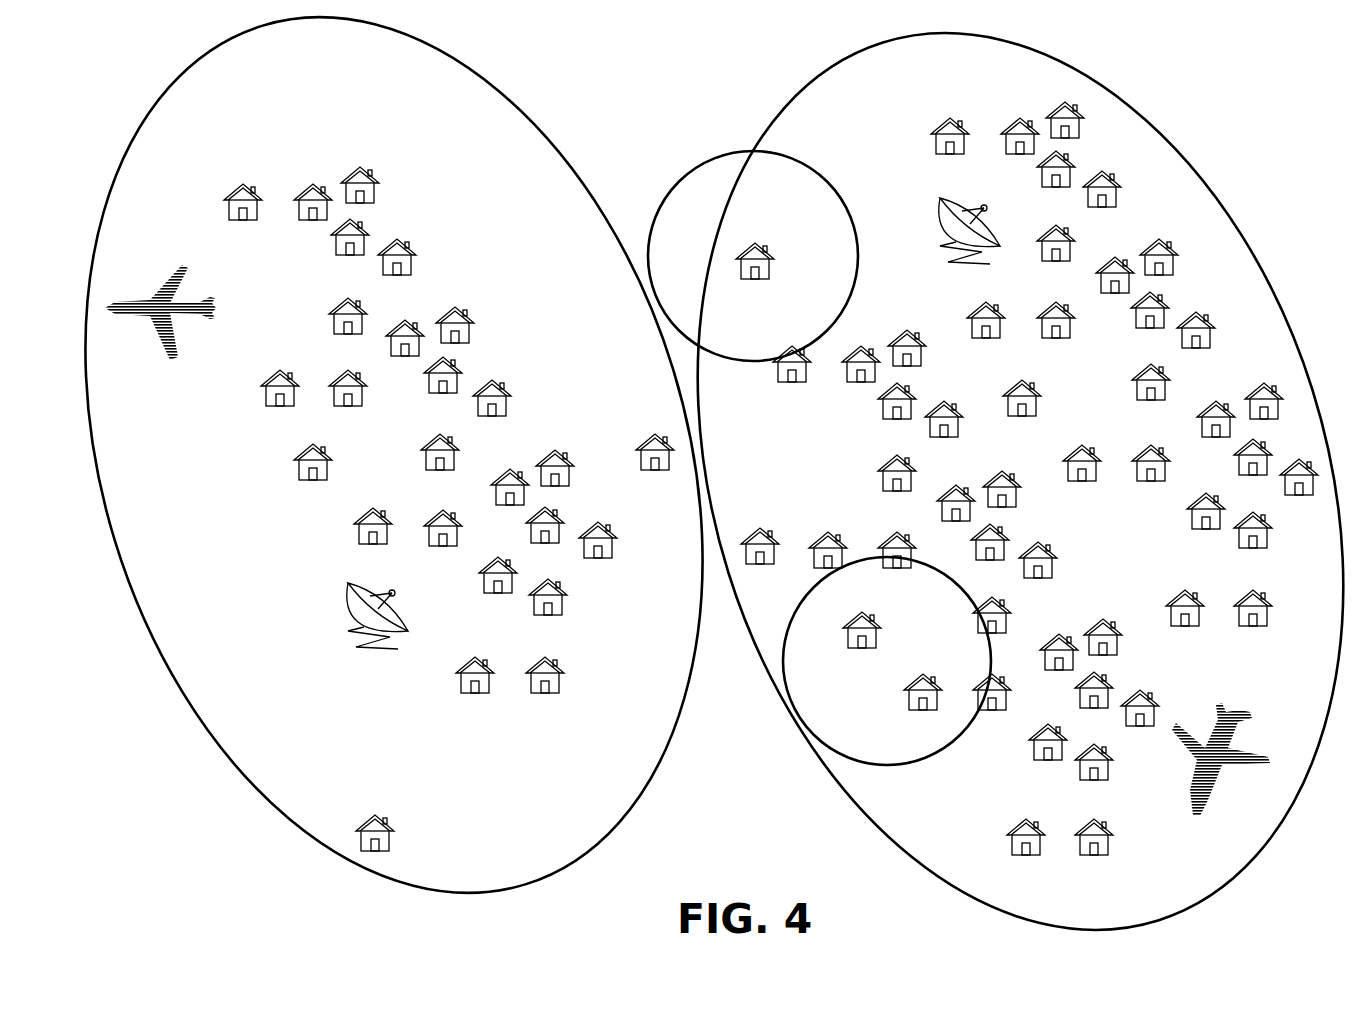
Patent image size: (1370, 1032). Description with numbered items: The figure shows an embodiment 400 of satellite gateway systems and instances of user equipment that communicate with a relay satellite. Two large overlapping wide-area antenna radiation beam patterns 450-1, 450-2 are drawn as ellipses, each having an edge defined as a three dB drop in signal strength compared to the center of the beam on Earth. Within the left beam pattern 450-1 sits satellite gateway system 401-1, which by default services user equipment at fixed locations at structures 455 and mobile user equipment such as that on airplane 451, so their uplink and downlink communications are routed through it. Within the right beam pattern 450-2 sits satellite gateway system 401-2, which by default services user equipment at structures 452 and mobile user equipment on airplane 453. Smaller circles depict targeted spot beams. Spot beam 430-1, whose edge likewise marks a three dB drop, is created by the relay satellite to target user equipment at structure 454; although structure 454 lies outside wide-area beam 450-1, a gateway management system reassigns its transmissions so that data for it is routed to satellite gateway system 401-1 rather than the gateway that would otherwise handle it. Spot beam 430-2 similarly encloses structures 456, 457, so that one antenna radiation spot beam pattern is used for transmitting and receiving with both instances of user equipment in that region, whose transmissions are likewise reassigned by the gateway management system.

The embodiment 400 is at (685, 506).
The wide-area antenna radiation beam pattern 450-1 is at (520, 106).
The wide-area antenna radiation beam pattern 450-2 is at (1161, 130).
The spot beam 430-1 is at (721, 150).
The spot beam 430-2 is at (934, 760).
The satellite gateway system 401-1 is at (396, 616).
The satellite gateway system 401-2 is at (988, 222).
The airplane 451 is at (152, 296).
The structure 452 is at (1214, 271).
The airplane 453 is at (1228, 714).
The structure 454 is at (762, 246).
The structure 455 is at (489, 290).
The structure 456 is at (884, 640).
The structure 457 is at (912, 703).